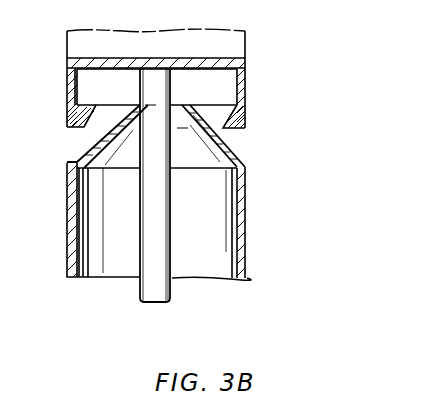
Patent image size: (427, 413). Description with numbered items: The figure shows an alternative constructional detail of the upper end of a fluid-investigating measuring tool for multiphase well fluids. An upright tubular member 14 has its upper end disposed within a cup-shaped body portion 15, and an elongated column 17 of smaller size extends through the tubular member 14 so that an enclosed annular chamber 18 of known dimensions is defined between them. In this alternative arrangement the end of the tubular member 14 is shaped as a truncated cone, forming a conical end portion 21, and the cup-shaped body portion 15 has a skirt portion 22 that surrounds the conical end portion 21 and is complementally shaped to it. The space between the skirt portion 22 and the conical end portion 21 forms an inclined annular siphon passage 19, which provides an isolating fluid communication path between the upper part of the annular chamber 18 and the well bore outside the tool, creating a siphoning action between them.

The tubular member 14 is at (243, 200).
The cup-shaped body portion 15 is at (237, 47).
The elongated column 17 is at (163, 290).
The annular chamber 18 is at (216, 235).
The upper siphon passage 19 is at (248, 132).
The conical end portion 21 is at (76, 150).
The skirt portion 22 is at (67, 118).